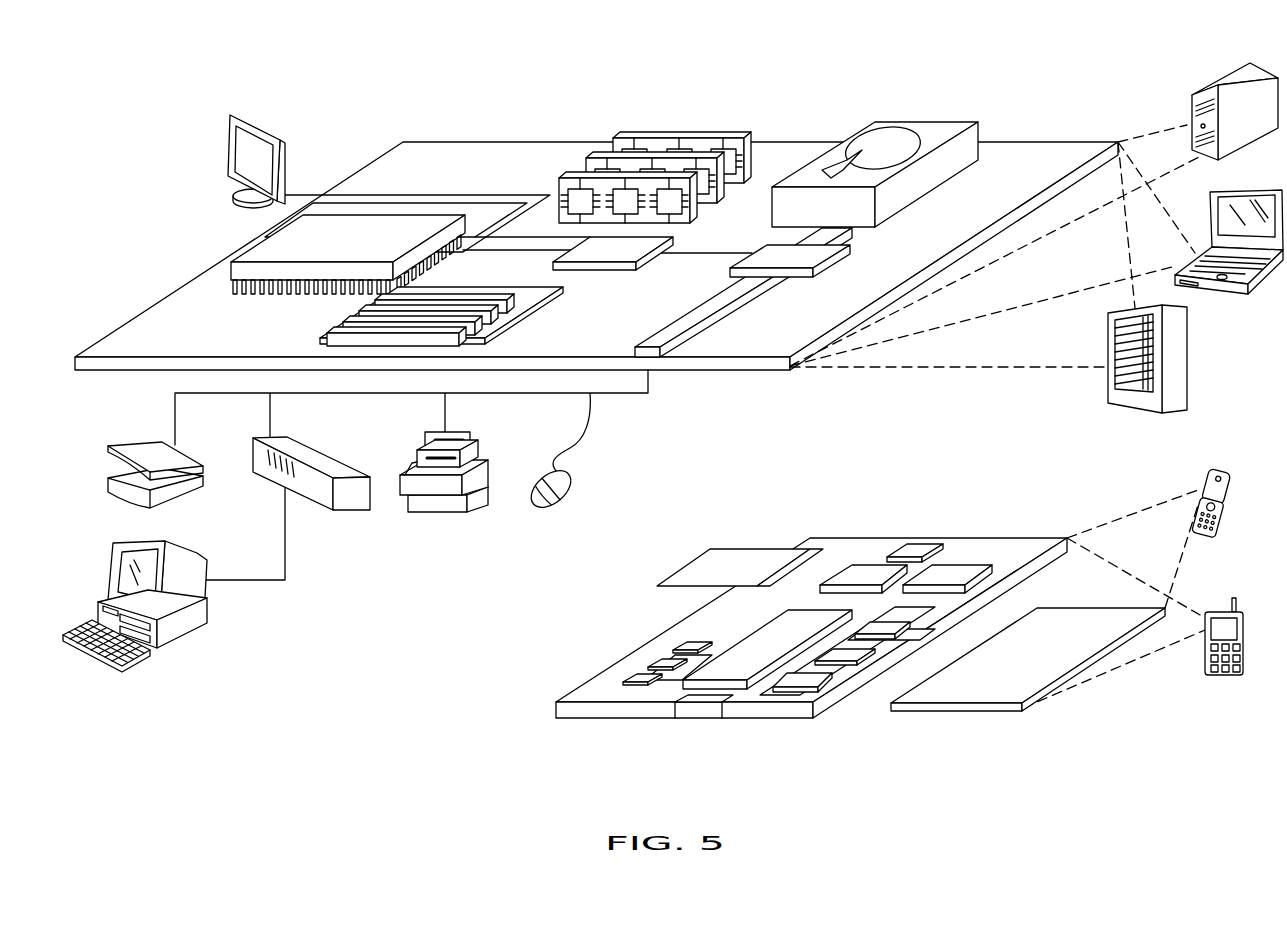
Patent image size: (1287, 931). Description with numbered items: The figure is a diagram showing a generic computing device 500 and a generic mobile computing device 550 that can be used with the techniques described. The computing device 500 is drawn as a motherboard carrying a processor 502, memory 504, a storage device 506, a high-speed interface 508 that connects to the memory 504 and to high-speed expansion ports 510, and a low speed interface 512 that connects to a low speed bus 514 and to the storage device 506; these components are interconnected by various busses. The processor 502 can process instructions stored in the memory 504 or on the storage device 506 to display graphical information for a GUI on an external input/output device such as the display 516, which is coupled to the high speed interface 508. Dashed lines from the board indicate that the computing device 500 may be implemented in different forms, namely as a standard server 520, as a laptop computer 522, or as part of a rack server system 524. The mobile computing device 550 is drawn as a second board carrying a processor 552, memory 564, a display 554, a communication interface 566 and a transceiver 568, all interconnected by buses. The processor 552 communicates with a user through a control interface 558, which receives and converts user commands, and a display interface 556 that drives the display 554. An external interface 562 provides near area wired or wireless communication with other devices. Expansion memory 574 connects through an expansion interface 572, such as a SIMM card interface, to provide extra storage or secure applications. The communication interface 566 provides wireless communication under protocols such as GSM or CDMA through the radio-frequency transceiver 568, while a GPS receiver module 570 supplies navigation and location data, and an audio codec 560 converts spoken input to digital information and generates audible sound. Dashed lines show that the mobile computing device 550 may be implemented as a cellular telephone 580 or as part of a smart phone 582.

The computing device 500 is at (352, 88).
The processor 502 is at (256, 243).
The memory 504 is at (691, 137).
The storage device 506 is at (915, 121).
The high-speed interface 508 is at (623, 248).
The high-speed expansion ports 510 is at (350, 322).
The low speed interface 512 is at (764, 255).
The low speed bus 514 is at (653, 346).
The display 516 is at (232, 113).
The standard server 520 is at (1208, 90).
The laptop computer 522 is at (1265, 190).
The rack server system 524 is at (1187, 363).
The mobile computing device 550 is at (508, 735).
The processor 552 is at (738, 656).
The display 554 is at (1065, 627).
The display interface 556 is at (815, 680).
The control interface 558 is at (850, 654).
The audio codec 560 is at (890, 626).
The external interface 562 is at (700, 710).
The memory 564 is at (656, 659).
The communication interface 566 is at (865, 570).
The transceiver 568 is at (953, 568).
The GPS receiver module 570 is at (918, 546).
The expansion interface 572 is at (790, 548).
The expansion memory 574 is at (710, 548).
The cellular telephone 580 is at (1210, 468).
The smart phone 582 is at (1216, 608).